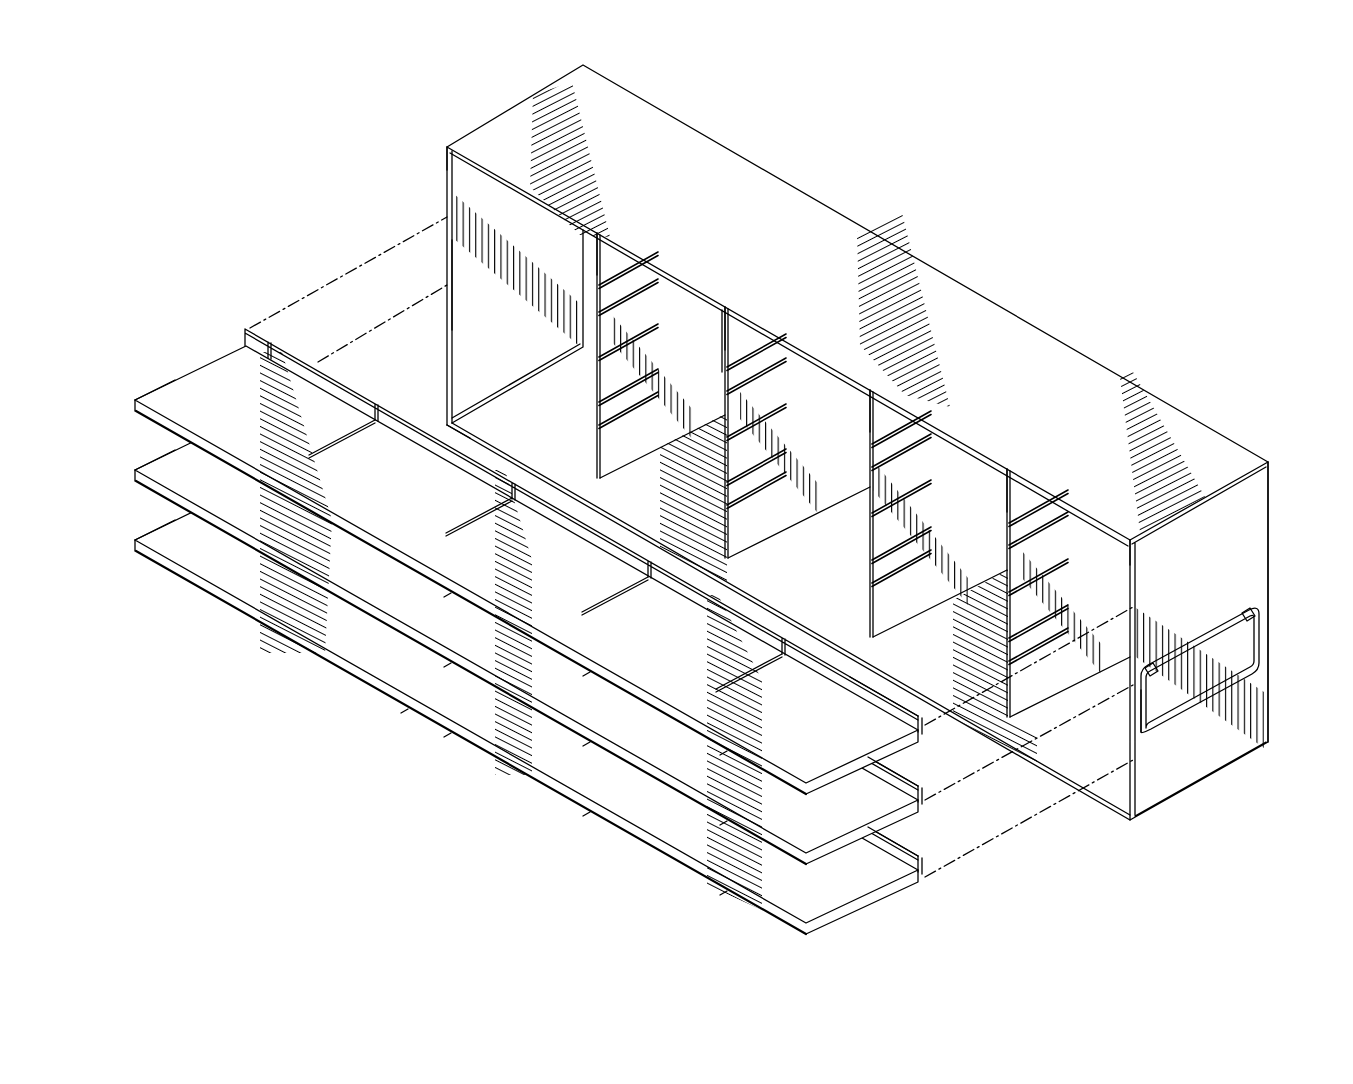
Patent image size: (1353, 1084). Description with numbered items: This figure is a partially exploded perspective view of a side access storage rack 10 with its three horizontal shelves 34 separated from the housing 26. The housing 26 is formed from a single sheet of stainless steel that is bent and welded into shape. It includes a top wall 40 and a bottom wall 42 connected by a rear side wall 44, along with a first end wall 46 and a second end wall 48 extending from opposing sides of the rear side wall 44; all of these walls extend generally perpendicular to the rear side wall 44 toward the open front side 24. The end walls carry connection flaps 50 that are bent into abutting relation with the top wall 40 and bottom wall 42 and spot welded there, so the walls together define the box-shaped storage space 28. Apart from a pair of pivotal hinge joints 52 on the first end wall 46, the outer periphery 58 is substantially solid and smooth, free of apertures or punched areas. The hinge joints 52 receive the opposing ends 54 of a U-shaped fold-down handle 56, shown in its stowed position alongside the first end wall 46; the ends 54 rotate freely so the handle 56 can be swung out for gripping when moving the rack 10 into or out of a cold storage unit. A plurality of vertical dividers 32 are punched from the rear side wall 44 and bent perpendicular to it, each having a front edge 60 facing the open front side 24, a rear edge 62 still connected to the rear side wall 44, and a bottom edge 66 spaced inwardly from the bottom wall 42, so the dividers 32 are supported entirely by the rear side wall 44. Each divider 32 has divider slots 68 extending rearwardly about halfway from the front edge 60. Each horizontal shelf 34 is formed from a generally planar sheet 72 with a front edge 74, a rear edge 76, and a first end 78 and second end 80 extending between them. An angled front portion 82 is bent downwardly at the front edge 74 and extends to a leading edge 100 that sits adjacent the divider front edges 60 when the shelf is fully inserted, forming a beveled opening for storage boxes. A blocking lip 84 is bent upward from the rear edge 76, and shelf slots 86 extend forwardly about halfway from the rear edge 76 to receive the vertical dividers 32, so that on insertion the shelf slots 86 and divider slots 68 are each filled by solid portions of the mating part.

The side access storage rack 10 is at (272, 122).
The open front side 24 is at (458, 271).
The housing 26 is at (776, 163).
The storage space 28 is at (788, 607).
The vertical dividers 32 is at (691, 300).
The horizontal shelves 34 is at (139, 391).
The top wall 40 is at (732, 225).
The bottom wall 42 is at (829, 552).
The rear side wall 44 is at (726, 318).
The first end wall 46 is at (1209, 565).
The second end wall 48 is at (497, 350).
The connection flaps 50 is at (447, 150).
The pivotal hinge joints 52 is at (1151, 664).
The opposing ends 54 is at (1228, 628).
The fold-down handle 56 is at (1150, 734).
The outer periphery 58 is at (440, 184).
The front edge 60 is at (595, 446).
The rear edge 62 is at (720, 351).
The bottom edge 66 is at (605, 480).
The divider slots 68 is at (640, 378).
The planar sheet 72 is at (435, 496).
The front edge 74 is at (203, 434).
The rear edge 76 is at (867, 695).
The first end 78 is at (898, 745).
The second end 80 is at (181, 374).
The angled front portion 82 is at (135, 545).
The blocking lip 84 is at (918, 718).
The shelf slots 86 is at (312, 456).
The leading edge 100 is at (420, 758).